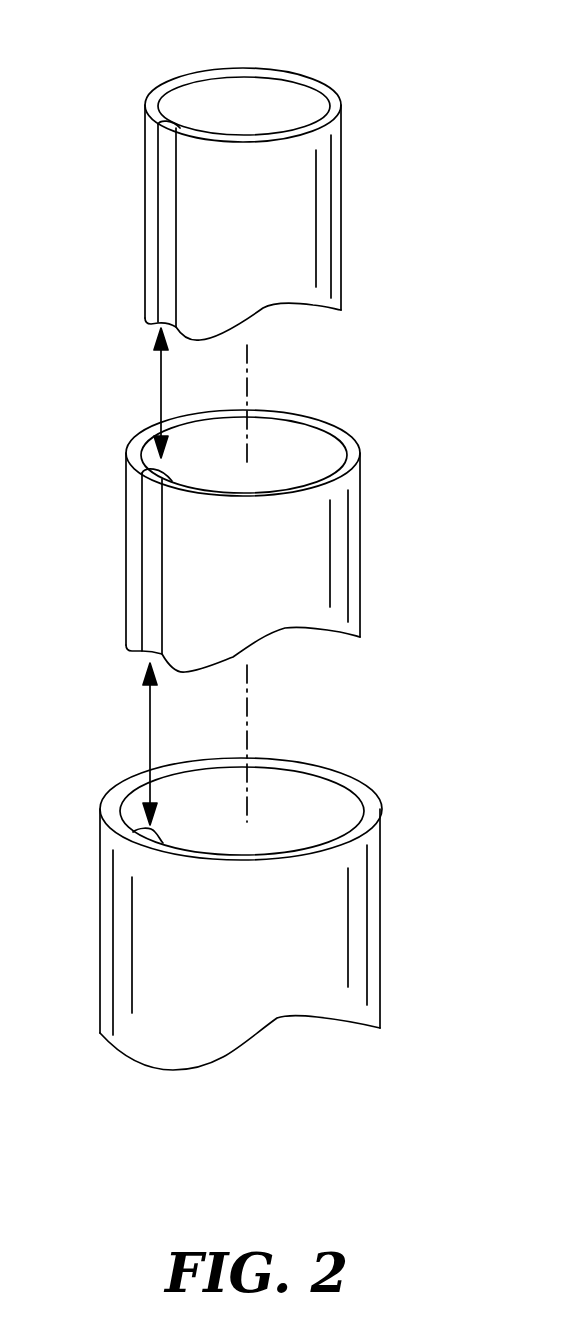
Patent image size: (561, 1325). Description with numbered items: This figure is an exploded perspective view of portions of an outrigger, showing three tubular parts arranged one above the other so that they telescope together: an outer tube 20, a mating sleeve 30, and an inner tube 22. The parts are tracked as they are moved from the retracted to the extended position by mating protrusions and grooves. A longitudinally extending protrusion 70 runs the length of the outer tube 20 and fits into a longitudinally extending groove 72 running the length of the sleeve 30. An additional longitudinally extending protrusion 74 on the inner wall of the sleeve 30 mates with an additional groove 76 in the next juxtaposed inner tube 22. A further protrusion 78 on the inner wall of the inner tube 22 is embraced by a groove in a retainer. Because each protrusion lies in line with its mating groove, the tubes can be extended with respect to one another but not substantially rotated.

The outer tube 20 is at (380, 928).
The inner tube 22 is at (345, 193).
The sleeve 30 is at (360, 548).
The protrusion 70 is at (157, 832).
The groove 72 is at (150, 570).
The protrusion 74 is at (172, 470).
The groove 76 is at (158, 237).
The protrusion 78 is at (180, 122).